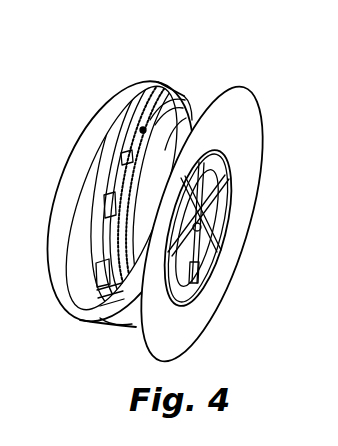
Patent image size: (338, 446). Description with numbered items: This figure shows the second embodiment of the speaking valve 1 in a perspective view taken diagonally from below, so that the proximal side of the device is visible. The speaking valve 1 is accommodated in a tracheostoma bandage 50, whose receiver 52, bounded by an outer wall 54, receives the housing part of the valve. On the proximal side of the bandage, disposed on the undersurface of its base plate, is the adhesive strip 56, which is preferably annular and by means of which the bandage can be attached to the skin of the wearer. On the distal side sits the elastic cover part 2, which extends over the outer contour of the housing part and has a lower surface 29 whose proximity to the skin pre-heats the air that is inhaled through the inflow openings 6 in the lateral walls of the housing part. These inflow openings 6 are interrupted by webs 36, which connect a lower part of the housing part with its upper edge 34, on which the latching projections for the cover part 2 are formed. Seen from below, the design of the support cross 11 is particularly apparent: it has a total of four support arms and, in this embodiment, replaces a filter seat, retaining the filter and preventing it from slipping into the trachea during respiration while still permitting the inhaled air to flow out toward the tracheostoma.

The speaking valve 1 is at (309, 23).
The cover part 2 is at (84, 121).
The inflow openings 6 is at (102, 247).
The support cross 11 is at (210, 239).
The lower surface 29 is at (182, 96).
The upper edge 34 is at (143, 130).
The webs 36 is at (118, 180).
The tracheostoma bandage 50 is at (235, 128).
The receiver 52 is at (175, 147).
The outer wall 54 is at (132, 318).
The adhesive strip 56 is at (247, 157).